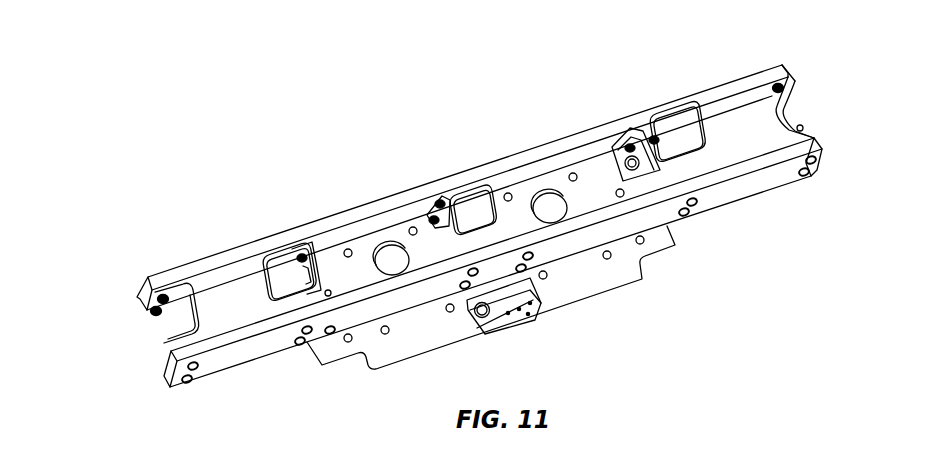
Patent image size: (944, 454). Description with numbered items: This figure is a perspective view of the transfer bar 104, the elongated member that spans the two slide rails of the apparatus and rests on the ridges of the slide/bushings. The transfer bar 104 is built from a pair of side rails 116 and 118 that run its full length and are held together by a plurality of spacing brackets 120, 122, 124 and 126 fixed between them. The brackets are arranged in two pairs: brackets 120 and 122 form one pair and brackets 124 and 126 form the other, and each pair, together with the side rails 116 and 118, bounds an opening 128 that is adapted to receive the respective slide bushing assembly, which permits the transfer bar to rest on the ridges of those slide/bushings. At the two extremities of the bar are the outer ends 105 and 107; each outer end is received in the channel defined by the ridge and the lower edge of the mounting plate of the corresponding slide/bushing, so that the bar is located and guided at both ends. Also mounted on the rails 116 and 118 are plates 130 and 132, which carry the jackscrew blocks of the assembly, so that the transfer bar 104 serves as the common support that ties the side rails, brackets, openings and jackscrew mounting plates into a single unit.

The transfer bar 104 is at (470, 143).
The outer end 105 is at (143, 297).
The outer end 107 is at (812, 165).
The side rail 116 is at (731, 85).
The side rail 118 is at (727, 190).
The spacing bracket 120 is at (182, 322).
The spacing bracket 122 is at (266, 298).
The spacing bracket 124 is at (690, 140).
The spacing bracket 126 is at (783, 112).
The opening 128 is at (232, 313).
The plate 130 is at (387, 345).
The plate 132 is at (618, 268).